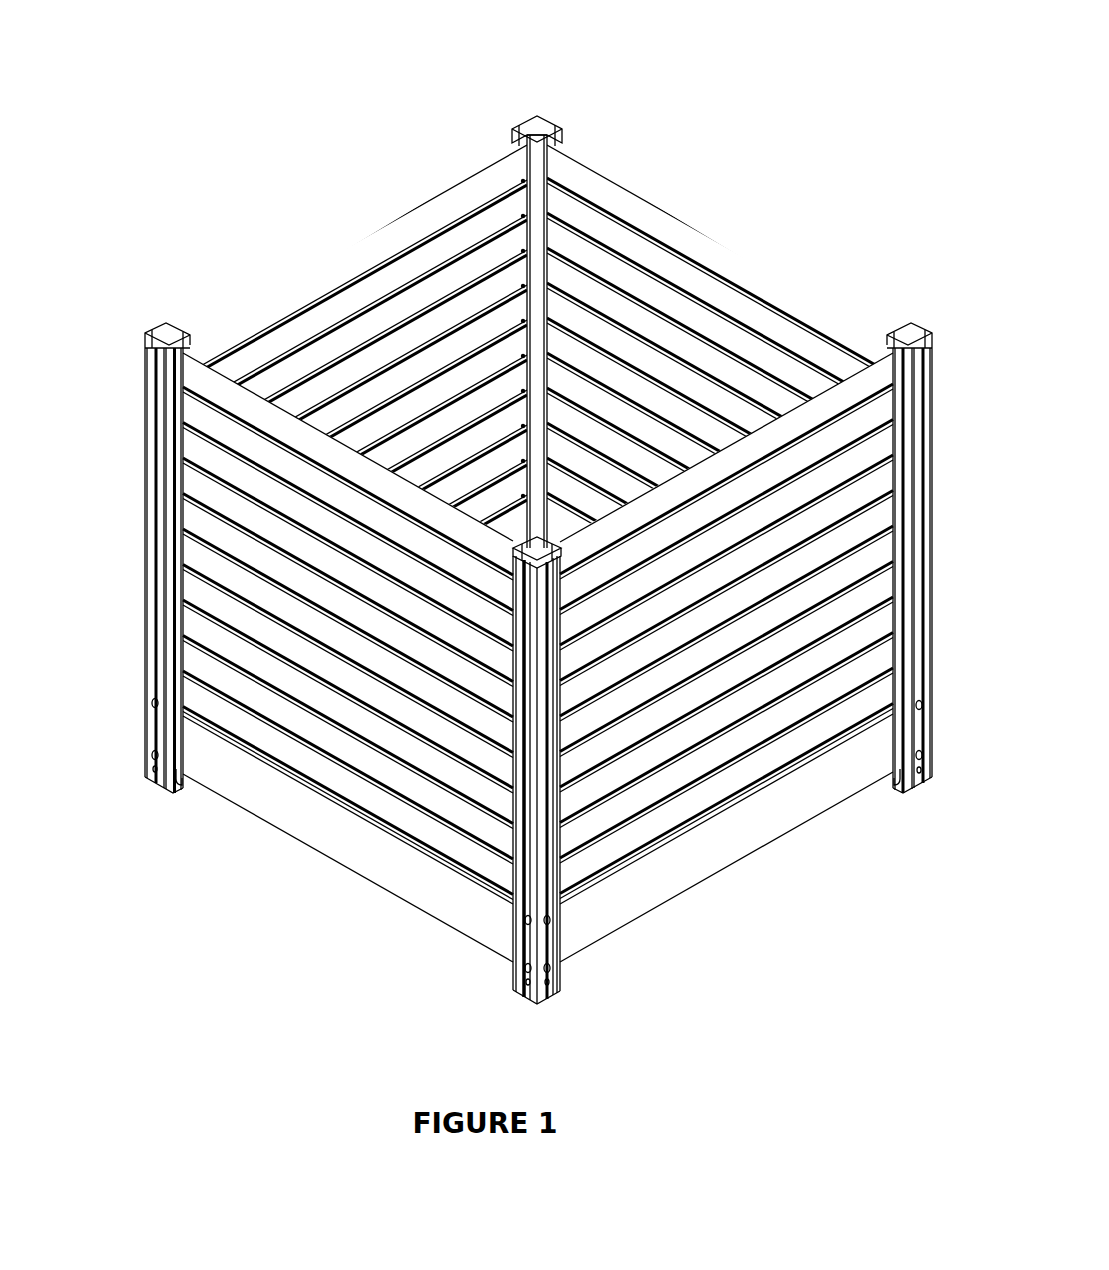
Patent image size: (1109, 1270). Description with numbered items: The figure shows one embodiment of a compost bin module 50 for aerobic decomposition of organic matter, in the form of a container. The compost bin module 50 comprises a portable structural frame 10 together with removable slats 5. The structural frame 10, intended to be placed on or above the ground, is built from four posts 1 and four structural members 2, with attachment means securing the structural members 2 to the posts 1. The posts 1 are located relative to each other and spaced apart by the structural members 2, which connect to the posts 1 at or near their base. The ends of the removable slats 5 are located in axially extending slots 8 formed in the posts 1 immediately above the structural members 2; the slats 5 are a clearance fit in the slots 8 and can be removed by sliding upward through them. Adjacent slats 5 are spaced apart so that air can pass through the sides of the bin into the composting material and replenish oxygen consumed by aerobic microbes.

The post 1 is at (540, 145).
The structural member 2 is at (293, 814).
The removable slat 5 is at (333, 275).
The axially extending slot 8 is at (177, 328).
The portable structural frame 10 is at (392, 921).
The compost bin module 50 is at (380, 105).